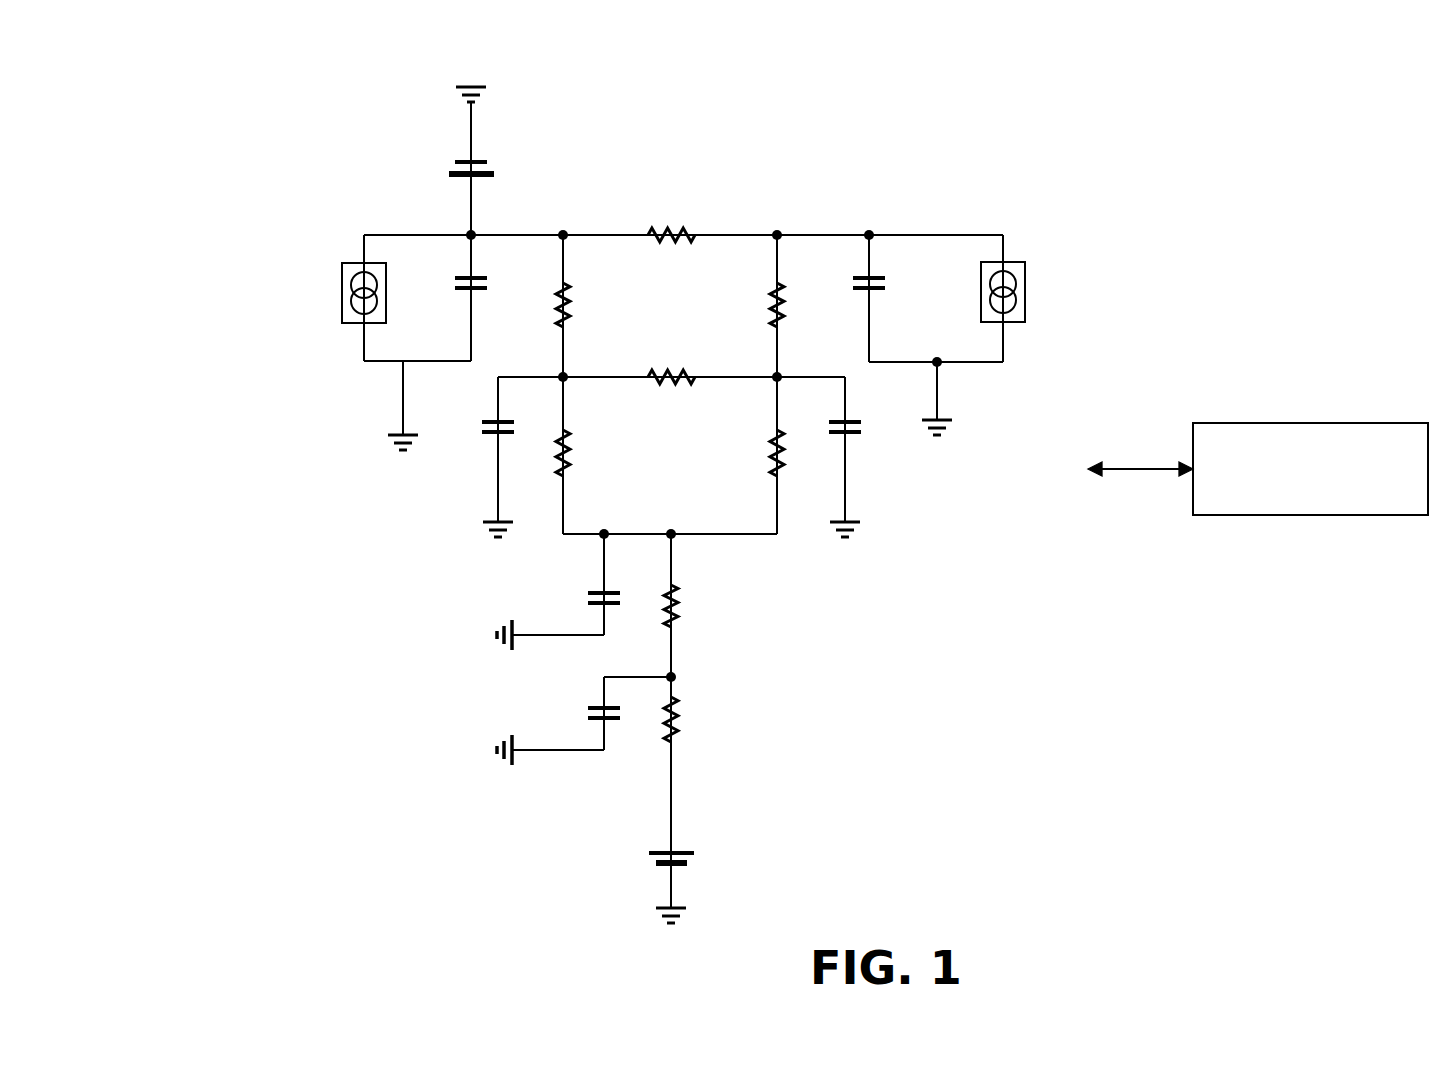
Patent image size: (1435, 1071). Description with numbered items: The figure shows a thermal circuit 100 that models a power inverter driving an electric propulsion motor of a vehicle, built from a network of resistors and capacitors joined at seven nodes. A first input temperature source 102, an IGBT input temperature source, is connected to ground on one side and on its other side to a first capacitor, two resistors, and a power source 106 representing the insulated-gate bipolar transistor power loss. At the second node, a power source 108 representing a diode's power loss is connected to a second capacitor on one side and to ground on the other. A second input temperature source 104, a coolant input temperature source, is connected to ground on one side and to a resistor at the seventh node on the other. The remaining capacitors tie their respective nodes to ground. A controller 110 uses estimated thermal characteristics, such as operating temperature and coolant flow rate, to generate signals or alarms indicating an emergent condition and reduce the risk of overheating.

The thermal circuit 100 is at (172, 108).
The first input temperature source 102 is at (424, 161).
The second input temperature source 104 is at (710, 816).
The power source 106 is at (314, 291).
The power source 108 is at (1050, 289).
The controller 110 is at (1315, 405).